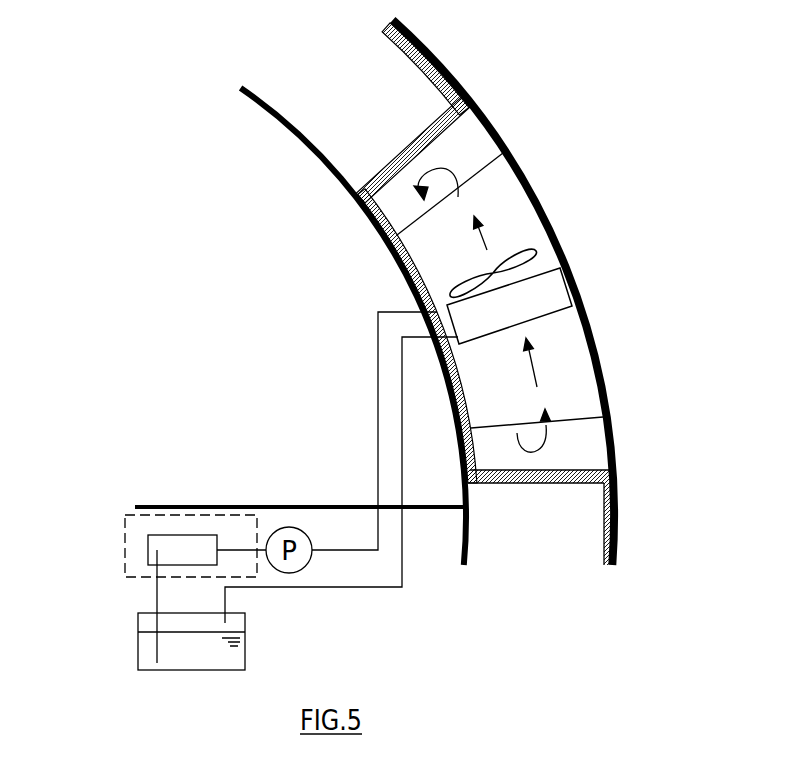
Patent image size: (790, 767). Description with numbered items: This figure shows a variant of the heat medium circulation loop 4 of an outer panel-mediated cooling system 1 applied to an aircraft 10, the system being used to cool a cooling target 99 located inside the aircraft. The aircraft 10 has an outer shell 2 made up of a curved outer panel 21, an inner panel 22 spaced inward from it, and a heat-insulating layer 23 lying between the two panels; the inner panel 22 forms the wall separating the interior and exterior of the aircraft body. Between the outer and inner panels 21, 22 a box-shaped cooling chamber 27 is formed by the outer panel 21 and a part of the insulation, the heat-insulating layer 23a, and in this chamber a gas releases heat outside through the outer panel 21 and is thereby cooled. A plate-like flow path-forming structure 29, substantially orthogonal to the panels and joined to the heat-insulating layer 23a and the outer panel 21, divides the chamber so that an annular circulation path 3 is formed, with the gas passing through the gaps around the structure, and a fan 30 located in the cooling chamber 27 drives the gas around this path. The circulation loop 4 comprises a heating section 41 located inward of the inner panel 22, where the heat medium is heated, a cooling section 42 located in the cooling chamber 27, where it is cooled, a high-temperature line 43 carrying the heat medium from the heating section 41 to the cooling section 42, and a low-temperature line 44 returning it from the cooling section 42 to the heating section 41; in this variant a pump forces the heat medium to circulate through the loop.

The outer panel-mediated cooling system 1 is at (637, 83).
The outer shell 2 is at (422, 40).
The annular circulation path 3 is at (535, 372).
The circulation loop 4 is at (408, 474).
The aircraft 10 is at (470, 78).
The outer panel 21 is at (617, 513).
The inner panel 22 is at (296, 137).
The heat-insulating layer 23 is at (426, 72).
The heat-insulating layer 23a is at (549, 485).
The cooling chamber 27 is at (585, 465).
The flow path-forming structure 29 is at (580, 421).
The fan 30 is at (547, 253).
The heating section 41 is at (180, 535).
The cooling section 42 is at (572, 283).
The high-temperature line 43 is at (378, 362).
The low-temperature line 44 is at (403, 433).
The cooling target 99 is at (125, 530).